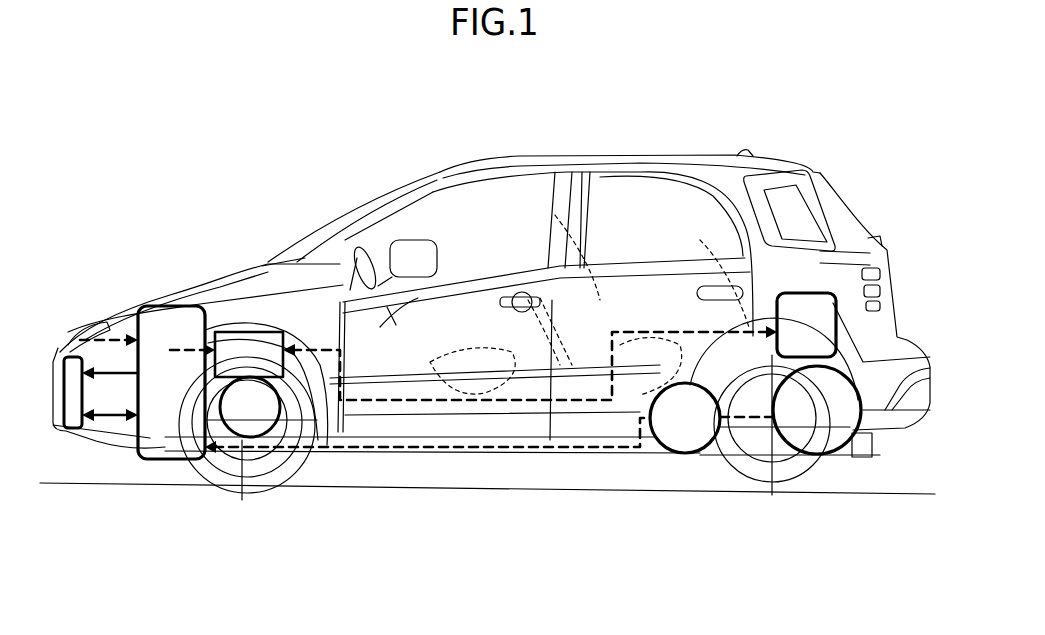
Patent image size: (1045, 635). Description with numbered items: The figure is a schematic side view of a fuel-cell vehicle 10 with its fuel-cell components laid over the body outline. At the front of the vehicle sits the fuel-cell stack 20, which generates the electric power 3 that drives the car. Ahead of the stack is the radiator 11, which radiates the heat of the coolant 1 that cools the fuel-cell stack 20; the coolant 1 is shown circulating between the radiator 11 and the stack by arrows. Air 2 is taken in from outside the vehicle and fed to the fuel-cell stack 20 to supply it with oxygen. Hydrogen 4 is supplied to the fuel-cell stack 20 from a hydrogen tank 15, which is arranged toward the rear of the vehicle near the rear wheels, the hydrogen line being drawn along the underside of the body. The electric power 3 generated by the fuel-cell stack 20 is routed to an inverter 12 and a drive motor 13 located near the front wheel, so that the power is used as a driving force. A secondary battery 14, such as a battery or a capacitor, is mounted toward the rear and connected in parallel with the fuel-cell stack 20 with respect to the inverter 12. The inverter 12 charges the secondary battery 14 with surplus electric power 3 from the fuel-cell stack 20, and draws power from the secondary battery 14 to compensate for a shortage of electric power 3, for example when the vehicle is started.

The fuel-cell vehicle 10 is at (487, 274).
The coolant 1 is at (110, 450).
The air 2 is at (109, 298).
The electric power 3 is at (473, 327).
The hydrogen 4 is at (427, 480).
The radiator 11 is at (64, 446).
The inverter 12 is at (249, 292).
The drive motor 13 is at (251, 461).
The secondary battery 14 is at (832, 264).
The hydrogen tank 15 is at (755, 453).
The fuel-cell stack 20 is at (171, 422).